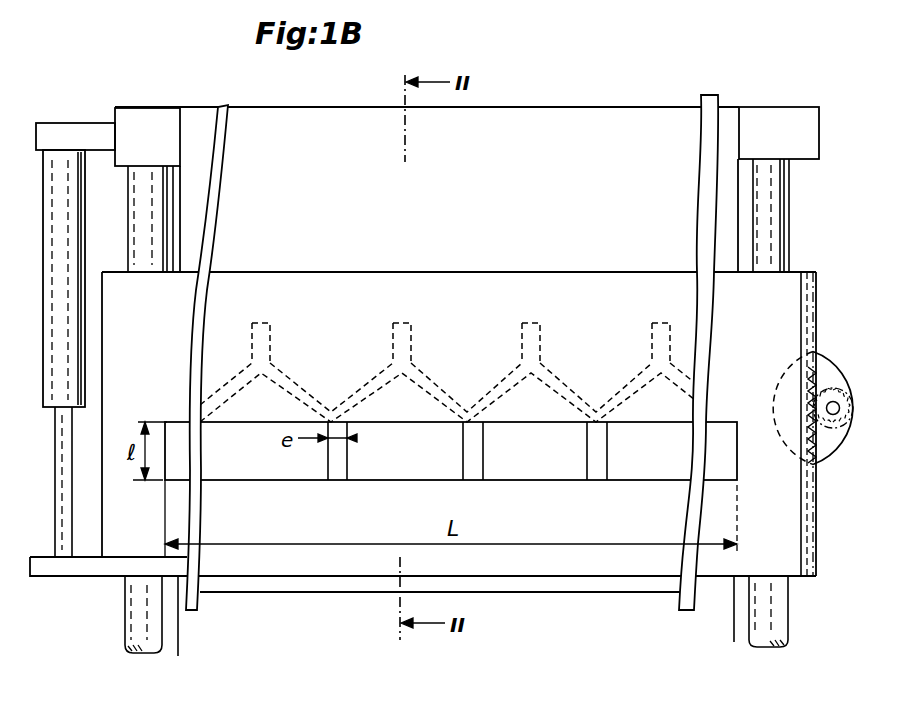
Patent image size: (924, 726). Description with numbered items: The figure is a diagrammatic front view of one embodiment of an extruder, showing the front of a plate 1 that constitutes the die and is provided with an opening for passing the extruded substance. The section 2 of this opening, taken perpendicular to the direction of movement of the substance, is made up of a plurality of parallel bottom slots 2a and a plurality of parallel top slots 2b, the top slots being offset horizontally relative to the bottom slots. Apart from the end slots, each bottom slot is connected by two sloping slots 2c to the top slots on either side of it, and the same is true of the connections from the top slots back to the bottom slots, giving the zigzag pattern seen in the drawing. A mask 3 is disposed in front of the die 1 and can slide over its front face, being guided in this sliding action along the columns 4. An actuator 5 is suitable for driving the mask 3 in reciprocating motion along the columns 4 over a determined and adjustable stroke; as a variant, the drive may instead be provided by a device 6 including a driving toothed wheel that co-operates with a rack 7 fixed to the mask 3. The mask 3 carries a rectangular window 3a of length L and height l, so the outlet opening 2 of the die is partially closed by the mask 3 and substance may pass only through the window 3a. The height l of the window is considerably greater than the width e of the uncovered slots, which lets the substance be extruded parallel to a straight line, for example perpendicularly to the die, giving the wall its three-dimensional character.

The plate 1 is at (358, 118).
The section of the opening 2 is at (447, 325).
The bottom slots 2a is at (463, 455).
The top slots 2b is at (393, 347).
The sloping slots 2c is at (503, 393).
The mask 3 is at (776, 297).
The rectangular window 3a is at (283, 472).
The columns 4 is at (140, 229).
The actuator 5 is at (60, 363).
The drive device 6 is at (843, 422).
The rack 7 is at (812, 335).